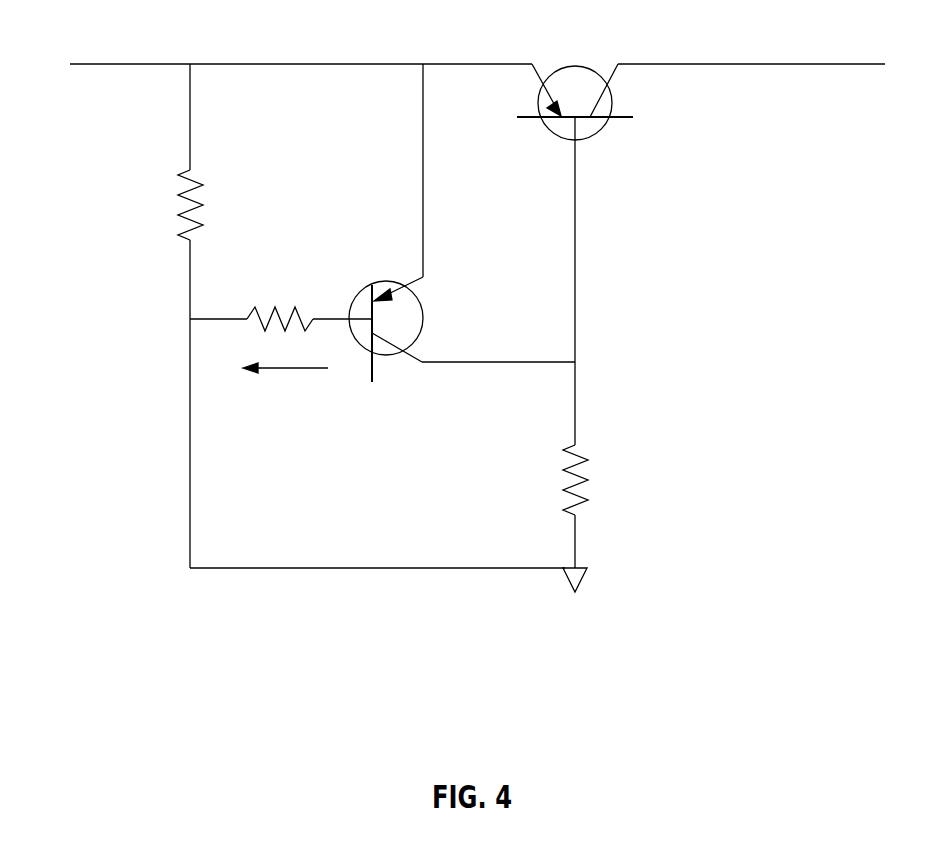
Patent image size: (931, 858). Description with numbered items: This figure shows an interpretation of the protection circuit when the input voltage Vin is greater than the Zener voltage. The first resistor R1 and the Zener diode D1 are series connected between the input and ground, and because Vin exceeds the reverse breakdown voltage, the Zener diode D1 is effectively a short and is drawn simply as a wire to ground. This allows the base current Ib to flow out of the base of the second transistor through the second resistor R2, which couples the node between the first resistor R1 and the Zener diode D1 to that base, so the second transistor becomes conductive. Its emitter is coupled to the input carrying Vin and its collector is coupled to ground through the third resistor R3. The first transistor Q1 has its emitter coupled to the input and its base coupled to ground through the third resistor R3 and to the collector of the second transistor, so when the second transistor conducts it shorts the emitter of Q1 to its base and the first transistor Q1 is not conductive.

The input voltage Vin is at (449, 45).
The Zener diode D1 is at (321, 316).
The first resistor R1 is at (209, 205).
The second resistor R2 is at (280, 299).
The third resistor R3 is at (595, 506).
The first transistor Q1 is at (587, 254).
The base current Ib is at (285, 386).